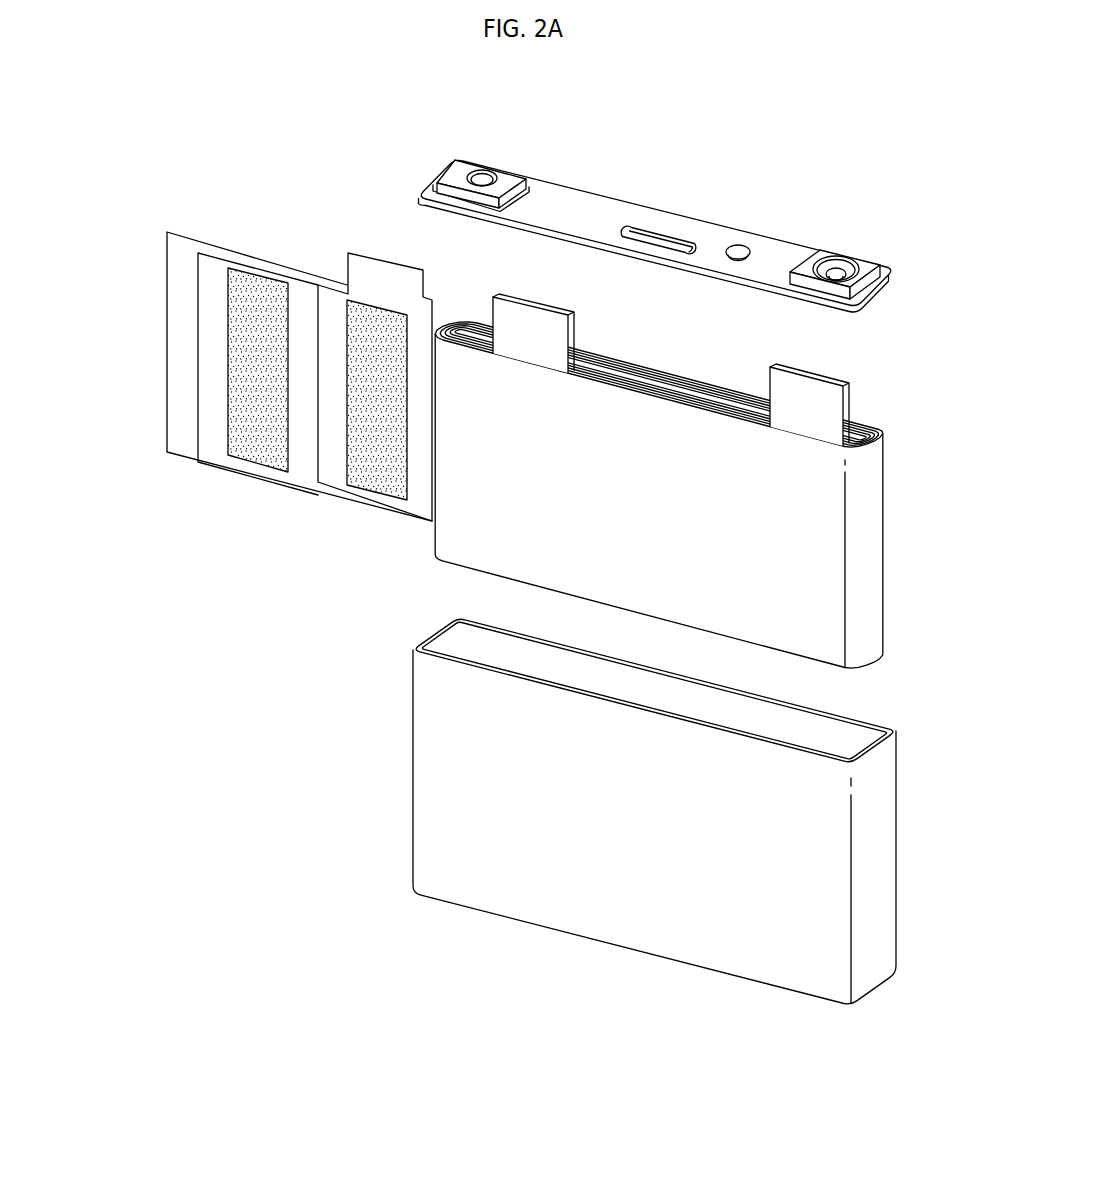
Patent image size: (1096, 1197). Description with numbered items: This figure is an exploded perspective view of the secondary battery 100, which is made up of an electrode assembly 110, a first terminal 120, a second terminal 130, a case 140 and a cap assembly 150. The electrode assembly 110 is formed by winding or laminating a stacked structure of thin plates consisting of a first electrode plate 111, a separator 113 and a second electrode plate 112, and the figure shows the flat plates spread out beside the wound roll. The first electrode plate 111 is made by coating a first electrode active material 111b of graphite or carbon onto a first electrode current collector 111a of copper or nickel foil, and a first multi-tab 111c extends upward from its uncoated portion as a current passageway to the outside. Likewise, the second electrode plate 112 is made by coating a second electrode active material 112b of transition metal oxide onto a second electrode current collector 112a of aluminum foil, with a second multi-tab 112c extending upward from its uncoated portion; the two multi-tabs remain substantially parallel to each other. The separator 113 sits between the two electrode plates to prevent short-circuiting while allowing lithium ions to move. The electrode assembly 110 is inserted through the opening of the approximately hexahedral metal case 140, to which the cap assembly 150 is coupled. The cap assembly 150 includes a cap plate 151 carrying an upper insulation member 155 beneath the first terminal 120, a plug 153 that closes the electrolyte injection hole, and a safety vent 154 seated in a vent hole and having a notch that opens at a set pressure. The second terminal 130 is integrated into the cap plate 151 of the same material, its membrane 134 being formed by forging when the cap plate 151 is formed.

The secondary battery 100 is at (958, 176).
The electrode assembly 110 is at (897, 528).
The first electrode plate 111 is at (333, 284).
The first electrode current collector 111a is at (330, 433).
The first electrode active material 111b is at (362, 397).
The first multi-tab 111c is at (570, 312).
The second electrode plate 112 is at (243, 262).
The second electrode current collector 112a is at (213, 340).
The second electrode active material 112b is at (240, 305).
The second multi-tab 112c is at (845, 383).
The separator 113 is at (415, 503).
The first terminal 120 is at (482, 150).
The second terminal 130 is at (872, 248).
The membrane 134 is at (834, 277).
The case 140 is at (914, 852).
The cap assembly 150 is at (906, 275).
The cap plate 151 is at (587, 200).
The plug 153 is at (740, 247).
The safety vent 154 is at (663, 235).
The upper insulation member 155 is at (533, 184).